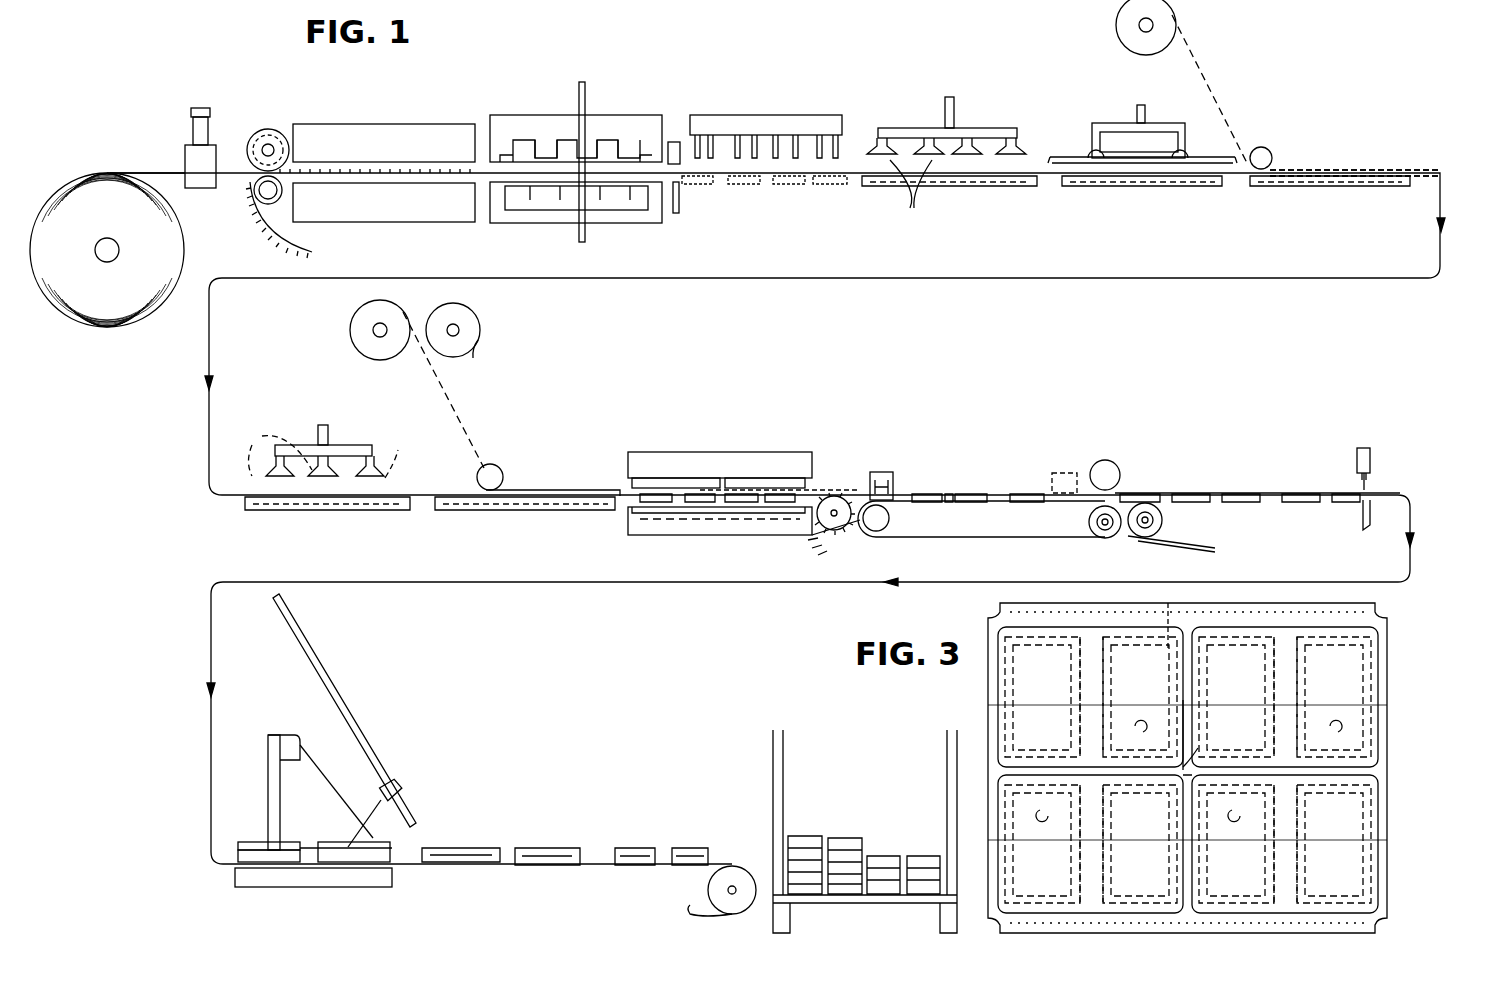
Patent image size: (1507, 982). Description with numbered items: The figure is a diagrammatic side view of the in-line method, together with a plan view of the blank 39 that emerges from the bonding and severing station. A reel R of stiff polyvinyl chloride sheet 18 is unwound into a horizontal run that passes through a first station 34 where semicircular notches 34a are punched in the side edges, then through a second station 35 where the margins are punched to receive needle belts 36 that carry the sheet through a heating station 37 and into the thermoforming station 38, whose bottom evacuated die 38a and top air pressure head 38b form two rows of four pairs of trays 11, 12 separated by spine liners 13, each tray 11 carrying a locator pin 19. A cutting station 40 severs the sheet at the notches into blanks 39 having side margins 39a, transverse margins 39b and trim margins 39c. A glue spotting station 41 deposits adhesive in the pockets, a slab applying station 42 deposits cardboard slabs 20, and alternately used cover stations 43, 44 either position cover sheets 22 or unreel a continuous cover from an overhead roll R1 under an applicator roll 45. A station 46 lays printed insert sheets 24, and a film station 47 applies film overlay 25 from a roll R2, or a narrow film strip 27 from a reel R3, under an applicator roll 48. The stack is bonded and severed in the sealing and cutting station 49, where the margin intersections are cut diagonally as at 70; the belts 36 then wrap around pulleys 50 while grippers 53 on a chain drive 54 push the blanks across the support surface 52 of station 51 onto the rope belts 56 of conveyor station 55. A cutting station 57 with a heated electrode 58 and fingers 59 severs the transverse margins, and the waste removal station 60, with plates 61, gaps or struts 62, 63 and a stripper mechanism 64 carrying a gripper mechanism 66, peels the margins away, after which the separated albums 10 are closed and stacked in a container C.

In FIG. 1, the reel R is at (106, 310).
In FIG. 1, the sheet material 18 is at (148, 170).
In FIG. 1, the first station 34 is at (210, 190).
In FIG. 1, the second station 35 is at (277, 130).
In FIG. 1, the needle belts 36 is at (312, 250).
In FIG. 1, the third station 37 is at (430, 122).
In FIG. 1, the thermoforming station 38 is at (640, 116).
In FIG. 1, the bottom evacuated die 38a is at (655, 215).
In FIG. 1, the top air pressure head 38b is at (503, 130).
In FIG. 1, the cutting station 40 is at (676, 140).
In FIG. 1, the glue spotting station 41 is at (768, 114).
In FIG. 1, the blank 39 is at (790, 188).
In FIG. 3, the blank 39 is at (1395, 606).
In FIG. 1, the cardboard slab applying station 42 is at (985, 125).
In FIG. 1, the cardboard slabs 20 is at (911, 197).
In FIG. 1, the cover applying station 43 is at (1155, 122).
In FIG. 1, the cover sheets 22 is at (1068, 150).
In FIG. 1, the overhead roll R1 is at (1117, 28).
In FIG. 1, the applicator roll 45 is at (1268, 146).
In FIG. 1, the cover applying station 44 is at (1285, 170).
In FIG. 1, the roll R2 is at (352, 330).
In FIG. 1, the reel R3 is at (478, 332).
In FIG. 1, the narrow film strip 27 is at (486, 348).
In FIG. 3, the narrow film strip 27 is at (1382, 700).
In FIG. 1, the film overlay 25 is at (432, 386).
In FIG. 1, the printed insert sheets 24 is at (327, 452).
In FIG. 1, the insert station 46 is at (345, 443).
In FIG. 1, the film applying station 47 is at (495, 463).
In FIG. 1, the applicator roll 48 is at (504, 478).
In FIG. 1, the sealing and cutting station 49 is at (812, 456).
In FIG. 1, the wheels or pulleys 50 is at (826, 524).
In FIG. 1, the reciprocating grippers 53 is at (882, 470).
In FIG. 1, the flat support surface 52 is at (950, 492).
In FIG. 1, the transfer station 51 is at (982, 494).
In FIG. 1, the endless chain drive support 54 is at (925, 538).
In FIG. 1, the conveyor station 55 is at (1253, 478).
In FIG. 1, the conveyor belts 56 is at (1235, 500).
In FIG. 1, the trim margins 39c is at (1216, 552).
In FIG. 3, the trim margins 39c is at (1190, 630).
In FIG. 1, the cutting station 57 is at (1372, 446).
In FIG. 1, the heated electrode 58 is at (1360, 480).
In FIG. 1, the fingers 59 is at (1362, 527).
In FIG. 1, the waste removal station 60 is at (348, 696).
In FIG. 1, the stripper mechanism 64 is at (311, 638).
In FIG. 1, the transverse gaps / apex 63 is at (283, 745).
In FIG. 1, the longitudinal gaps / posts 62 is at (300, 808).
In FIG. 1, the horizontal plates 61 is at (256, 840).
In FIG. 1, the side margins 39a is at (365, 835).
In FIG. 3, the side margins 39a is at (1132, 603).
In FIG. 1, the gripper mechanism 66 is at (400, 785).
In FIG. 1, the transverse margins 39b is at (375, 828).
In FIG. 3, the transverse margins 39b is at (988, 686).
In FIG. 1, the holder 10 is at (466, 846).
In FIG. 1, the container C is at (847, 733).
In FIG. 3, the semicircular notches 34a is at (995, 608).
In FIG. 3, the diagonal severing 70 is at (1183, 770).
In FIG. 3, the tray 12 is at (1052, 682).
In FIG. 3, the tray 11 is at (1150, 680).
In FIG. 3, the spine liner portion 13 is at (1096, 683).
In FIG. 3, the cassette locator pin 19 is at (1200, 779).